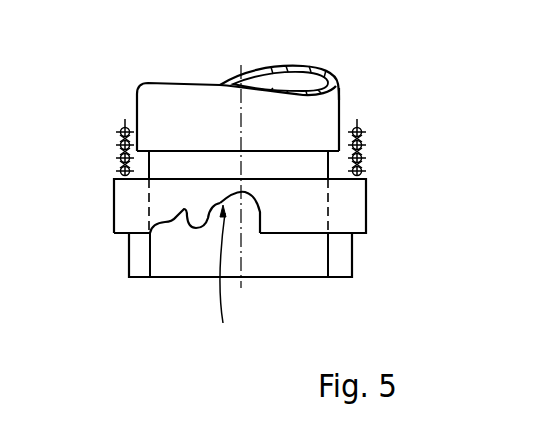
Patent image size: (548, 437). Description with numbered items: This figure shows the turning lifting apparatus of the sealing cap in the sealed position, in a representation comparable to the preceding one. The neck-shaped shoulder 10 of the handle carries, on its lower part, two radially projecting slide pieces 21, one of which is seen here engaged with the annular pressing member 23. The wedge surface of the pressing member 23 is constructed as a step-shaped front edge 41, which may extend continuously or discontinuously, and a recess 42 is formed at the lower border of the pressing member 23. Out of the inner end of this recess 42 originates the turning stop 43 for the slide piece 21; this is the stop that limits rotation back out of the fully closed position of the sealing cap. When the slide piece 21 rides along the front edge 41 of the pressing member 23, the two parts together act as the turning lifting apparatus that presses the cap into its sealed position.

The neck-shaped shoulder 10 is at (328, 118).
The slide piece 21 is at (135, 255).
The annular pressing member 23 is at (353, 203).
The step-shaped front edge 41 is at (183, 211).
The recess 42 is at (221, 285).
The turning stop 43 is at (256, 215).